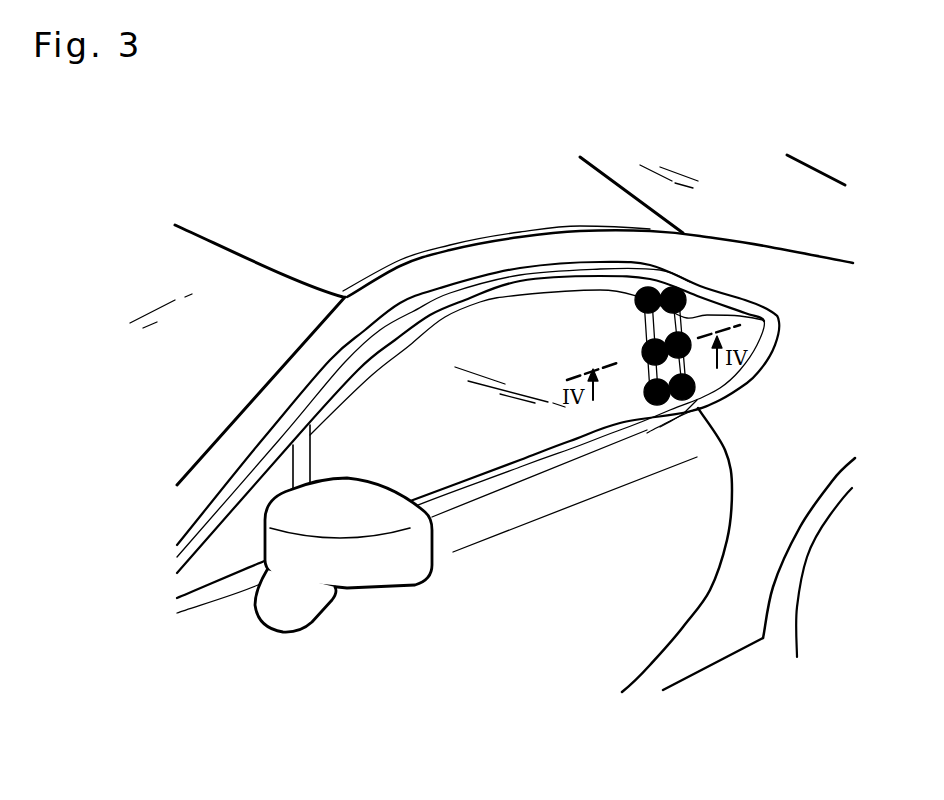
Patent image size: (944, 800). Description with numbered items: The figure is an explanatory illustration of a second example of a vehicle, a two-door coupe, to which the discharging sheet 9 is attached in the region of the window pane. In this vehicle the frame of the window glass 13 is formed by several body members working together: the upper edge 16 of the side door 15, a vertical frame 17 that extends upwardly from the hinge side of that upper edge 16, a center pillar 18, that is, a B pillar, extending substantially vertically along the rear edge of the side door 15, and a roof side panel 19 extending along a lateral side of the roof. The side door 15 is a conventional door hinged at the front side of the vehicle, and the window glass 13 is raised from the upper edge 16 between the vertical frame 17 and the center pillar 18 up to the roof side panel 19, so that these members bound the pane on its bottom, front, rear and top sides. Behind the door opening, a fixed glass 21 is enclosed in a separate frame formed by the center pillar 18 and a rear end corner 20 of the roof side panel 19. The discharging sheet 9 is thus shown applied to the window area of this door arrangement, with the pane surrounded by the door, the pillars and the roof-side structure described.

The discharging sheet 9 is at (678, 288).
The window glass 13 is at (573, 423).
The side door 15 is at (607, 657).
The upper edge 16 is at (533, 468).
The vertical frame 17 is at (300, 458).
The center pillar 18 is at (775, 320).
The roof side panel 19 is at (494, 255).
The rear end corner 20 is at (777, 287).
The fixed glass 21 is at (747, 338).